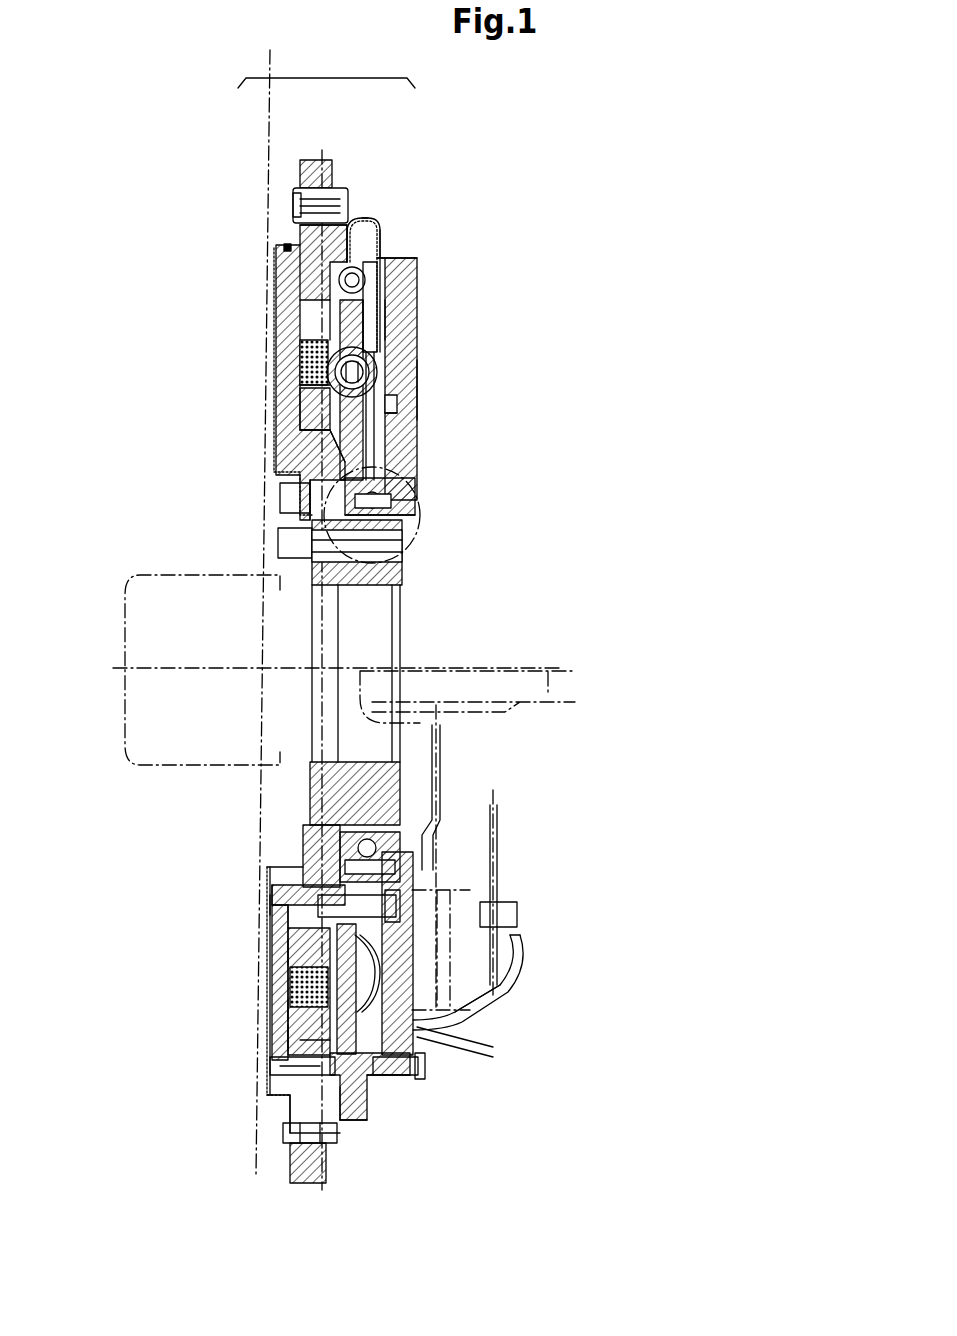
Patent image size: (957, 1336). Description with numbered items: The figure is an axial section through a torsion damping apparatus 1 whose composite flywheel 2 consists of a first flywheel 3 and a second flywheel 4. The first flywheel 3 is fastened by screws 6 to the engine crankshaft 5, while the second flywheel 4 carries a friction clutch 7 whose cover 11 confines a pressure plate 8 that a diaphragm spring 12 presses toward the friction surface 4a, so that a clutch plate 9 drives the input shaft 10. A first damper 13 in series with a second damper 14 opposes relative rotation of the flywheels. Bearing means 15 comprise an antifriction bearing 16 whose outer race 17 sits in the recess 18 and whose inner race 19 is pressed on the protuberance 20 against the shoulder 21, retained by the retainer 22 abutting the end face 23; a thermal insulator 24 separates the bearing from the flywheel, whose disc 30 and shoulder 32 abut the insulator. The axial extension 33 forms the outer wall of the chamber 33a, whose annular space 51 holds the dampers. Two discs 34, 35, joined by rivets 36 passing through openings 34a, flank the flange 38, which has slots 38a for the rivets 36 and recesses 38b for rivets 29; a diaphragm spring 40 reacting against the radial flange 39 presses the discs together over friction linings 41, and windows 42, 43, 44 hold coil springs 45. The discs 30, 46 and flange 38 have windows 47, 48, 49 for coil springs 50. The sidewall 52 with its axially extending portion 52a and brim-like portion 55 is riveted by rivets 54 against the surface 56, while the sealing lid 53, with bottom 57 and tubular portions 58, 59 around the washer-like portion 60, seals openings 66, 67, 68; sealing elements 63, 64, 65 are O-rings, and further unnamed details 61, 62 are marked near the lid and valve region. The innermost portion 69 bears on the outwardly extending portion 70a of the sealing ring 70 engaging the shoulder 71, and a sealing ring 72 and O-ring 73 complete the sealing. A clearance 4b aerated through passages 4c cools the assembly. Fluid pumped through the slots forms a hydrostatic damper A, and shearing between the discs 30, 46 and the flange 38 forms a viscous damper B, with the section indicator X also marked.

The torsion damping apparatus 1 is at (562, 162).
The composite flywheel 2 is at (326, 64).
The first flywheel 3 is at (303, 305).
The second flywheel 4 is at (400, 300).
The friction surface 4a is at (413, 933).
The annular clearance 4b is at (410, 258).
The aerating passage 4c is at (412, 402).
The crankshaft 5 is at (292, 497).
The screws 6 is at (405, 556).
The friction clutch 7 is at (497, 1000).
The pressure plate 8 is at (457, 998).
The clutch plate 9 is at (440, 796).
The input shaft 10 is at (548, 688).
The cover 11 is at (514, 985).
The diaphragm spring 12 is at (498, 862).
The first damper 13 is at (335, 396).
The second damper 14 is at (300, 280).
The bearing means 15 is at (312, 592).
The antifriction bearing 16 is at (312, 512).
The outer race 17 is at (405, 512).
The coaxial recess 18 is at (392, 480).
The inner race 19 is at (395, 502).
The cylindrical protuberance 20 is at (312, 578).
The shoulder 21 is at (312, 798).
The disc-shaped retainer 22 is at (398, 598).
The end face 23 is at (398, 774).
The thermal insulator 24 is at (298, 918).
The rivets 29 is at (296, 958).
The disc 30 is at (300, 1003).
The shoulder 32 is at (400, 860).
The axial extension 33 is at (365, 245).
The annular chamber 33a is at (288, 250).
The disc 34 is at (300, 1136).
The openings 34a is at (310, 1042).
The disc 35 is at (348, 1108).
The rivets 36 is at (300, 1078).
The flange 38 is at (290, 1032).
The slots 38a is at (420, 1068).
The recesses 38b is at (266, 905).
The radial flange 39 is at (293, 985).
The diaphragm spring 40 is at (327, 316).
The friction linings 41 is at (382, 240).
The windows 42 is at (388, 256).
The windows 43 is at (323, 262).
The windows 44 is at (372, 288).
The coil springs 45 is at (340, 286).
The disc 46 is at (400, 1048).
The windows 47 is at (343, 372).
The windows 48 is at (380, 318).
The windows 49 is at (318, 408).
The coil springs 50 is at (377, 352).
The annular space 51 is at (378, 285).
The sidewall 52 is at (380, 980).
The axially extending portion 52a is at (372, 232).
The sealing lid 53 is at (308, 358).
The rivets 54 is at (318, 172).
The brim-like portion 55 is at (340, 205).
The radially extending surface 56 is at (296, 205).
The bottom 57 is at (268, 940).
The tubular portion 58 is at (300, 865).
The tubular portion 59 is at (300, 1100).
The washer-like portion 60 is at (300, 436).
The wall 61 is at (288, 895).
The valve seat 62 is at (367, 1092).
The sealing element 63 is at (350, 1125).
The sealing element 64 is at (276, 868).
The sealing element 65 is at (312, 256).
The opening 66 is at (268, 1064).
The opening 67 is at (316, 452).
The opening 68 is at (272, 890).
The radially innermost portion 69 is at (405, 375).
The sealing ring 70 is at (385, 420).
The radially outwardly extending portion 70a is at (397, 404).
The shoulder 71 is at (378, 420).
The sealing ring 72 is at (312, 538).
The O-ring 73 is at (392, 494).
The hydrostatic damper A is at (372, 1082).
The viscous damper B is at (452, 1033).
The section X is at (405, 541).